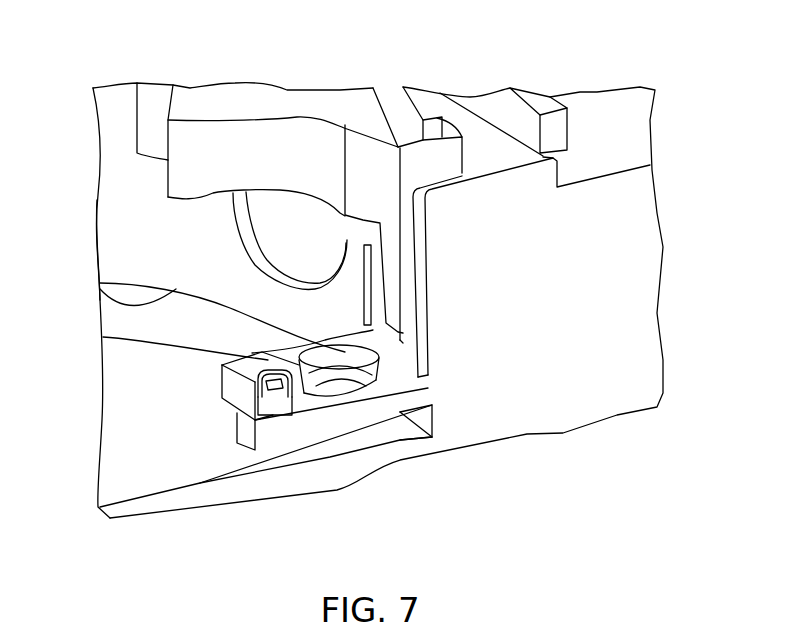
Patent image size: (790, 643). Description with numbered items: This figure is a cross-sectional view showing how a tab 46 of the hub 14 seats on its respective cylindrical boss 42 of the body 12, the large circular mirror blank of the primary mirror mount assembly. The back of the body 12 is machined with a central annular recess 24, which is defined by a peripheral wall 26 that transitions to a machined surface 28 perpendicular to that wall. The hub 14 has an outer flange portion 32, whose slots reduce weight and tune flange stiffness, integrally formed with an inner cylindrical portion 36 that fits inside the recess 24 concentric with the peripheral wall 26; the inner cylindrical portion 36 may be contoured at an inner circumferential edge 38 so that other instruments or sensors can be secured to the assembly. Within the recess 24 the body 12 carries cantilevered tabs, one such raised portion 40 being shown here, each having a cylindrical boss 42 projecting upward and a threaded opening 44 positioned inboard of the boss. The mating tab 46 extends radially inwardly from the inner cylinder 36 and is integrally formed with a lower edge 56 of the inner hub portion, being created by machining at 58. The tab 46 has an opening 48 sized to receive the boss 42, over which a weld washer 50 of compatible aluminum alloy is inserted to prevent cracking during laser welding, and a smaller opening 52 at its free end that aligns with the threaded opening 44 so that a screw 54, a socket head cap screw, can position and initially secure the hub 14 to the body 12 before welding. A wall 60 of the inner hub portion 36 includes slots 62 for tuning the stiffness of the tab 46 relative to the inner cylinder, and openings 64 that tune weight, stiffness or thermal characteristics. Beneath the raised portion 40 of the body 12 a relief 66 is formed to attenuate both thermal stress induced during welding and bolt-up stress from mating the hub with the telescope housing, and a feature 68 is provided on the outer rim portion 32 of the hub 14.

The body 12 is at (628, 417).
The hub 14 is at (80, 242).
The central annular recess 24 is at (120, 457).
The peripheral wall 26 is at (425, 280).
The machined surface 28 is at (478, 128).
The outer flange portion 32 is at (537, 97).
The inner cylindrical portion 36 is at (110, 133).
The inner circumferential edge 38 is at (187, 108).
The cantilevered tab 40 is at (380, 403).
The cylindrical boss 42 is at (252, 353).
The threaded opening 44 is at (262, 393).
The tab 46 is at (233, 397).
The opening 48 is at (348, 392).
The weld washer 50 is at (322, 390).
The smaller opening 52 is at (283, 402).
The screw 54 is at (268, 397).
The lower edge 56 is at (100, 300).
The machined region 58 is at (403, 342).
The wall 60 is at (153, 212).
The slot 62 is at (370, 218).
The opening 64 is at (253, 233).
The relief 66 is at (410, 428).
The feature 68 is at (405, 97).